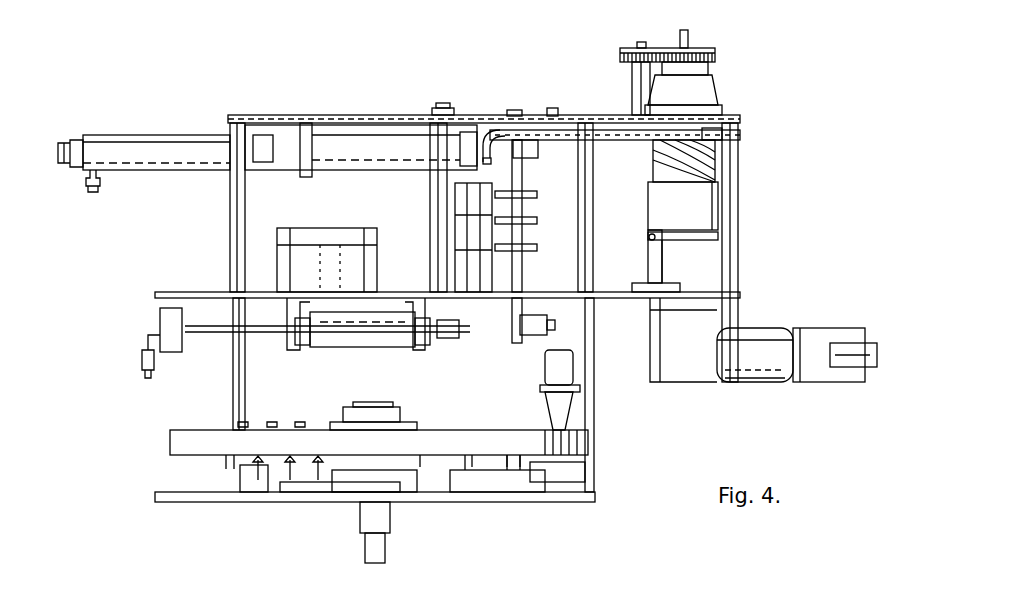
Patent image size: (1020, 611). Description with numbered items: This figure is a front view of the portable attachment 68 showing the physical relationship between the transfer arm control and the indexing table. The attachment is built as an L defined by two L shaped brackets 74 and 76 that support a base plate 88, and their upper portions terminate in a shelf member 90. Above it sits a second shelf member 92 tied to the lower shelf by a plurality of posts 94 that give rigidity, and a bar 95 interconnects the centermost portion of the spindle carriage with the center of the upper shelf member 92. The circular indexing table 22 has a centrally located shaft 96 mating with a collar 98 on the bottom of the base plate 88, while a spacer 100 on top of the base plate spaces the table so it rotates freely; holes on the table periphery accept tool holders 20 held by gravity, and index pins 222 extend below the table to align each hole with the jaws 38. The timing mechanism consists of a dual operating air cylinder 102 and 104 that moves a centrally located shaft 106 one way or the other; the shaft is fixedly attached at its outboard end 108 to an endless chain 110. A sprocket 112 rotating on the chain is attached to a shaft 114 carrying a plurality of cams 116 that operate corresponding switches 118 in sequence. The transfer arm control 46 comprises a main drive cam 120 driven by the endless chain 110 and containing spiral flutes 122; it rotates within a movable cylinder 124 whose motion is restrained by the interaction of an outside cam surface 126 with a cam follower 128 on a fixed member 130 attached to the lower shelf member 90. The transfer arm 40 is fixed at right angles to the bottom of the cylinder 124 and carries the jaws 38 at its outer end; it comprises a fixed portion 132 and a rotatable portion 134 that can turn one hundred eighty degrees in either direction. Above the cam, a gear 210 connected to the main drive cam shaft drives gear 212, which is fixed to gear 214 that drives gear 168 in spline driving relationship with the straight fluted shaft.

The tool holder 20 is at (545, 378).
The indexing table 22 is at (470, 430).
The jaws 38 is at (870, 345).
The transfer arm 40 is at (770, 320).
The transfer arm control 46 is at (725, 133).
The portable attachment 68 is at (606, 440).
The L shaped bracket 74 is at (233, 397).
The L shaped bracket 76 is at (594, 393).
The base plate 88 is at (218, 502).
The shelf member 90 is at (205, 292).
The second shelf member 92 is at (280, 115).
The posts 94 is at (230, 220).
The bar 95 is at (445, 104).
The shaft 96 is at (388, 547).
The collar 98 is at (360, 515).
The spacer 100 is at (415, 485).
The air cylinder 102 is at (150, 135).
The air cylinder 104 is at (362, 170).
The shaft 106 is at (487, 128).
The outboard end 108 is at (530, 150).
The endless chain 110 is at (607, 132).
The sprocket 112 is at (517, 128).
The shaft 114 is at (525, 185).
The cams 116 is at (690, 34).
The switches 118 is at (455, 275).
The main drive cam 120 is at (655, 155).
The spiral flutes 122 is at (710, 160).
The movable cylinder 124 is at (700, 215).
The outside cam surface 126 is at (715, 237).
The cam follower 128 is at (650, 237).
The fixed member 130 is at (648, 276).
The fixed portion 132 is at (755, 382).
The rotatable portion 134 is at (830, 330).
The gear 168 is at (710, 50).
The gear 210 is at (708, 66).
The gear 212 is at (632, 48).
The gear 214 is at (640, 46).
The index pins 222 is at (520, 470).